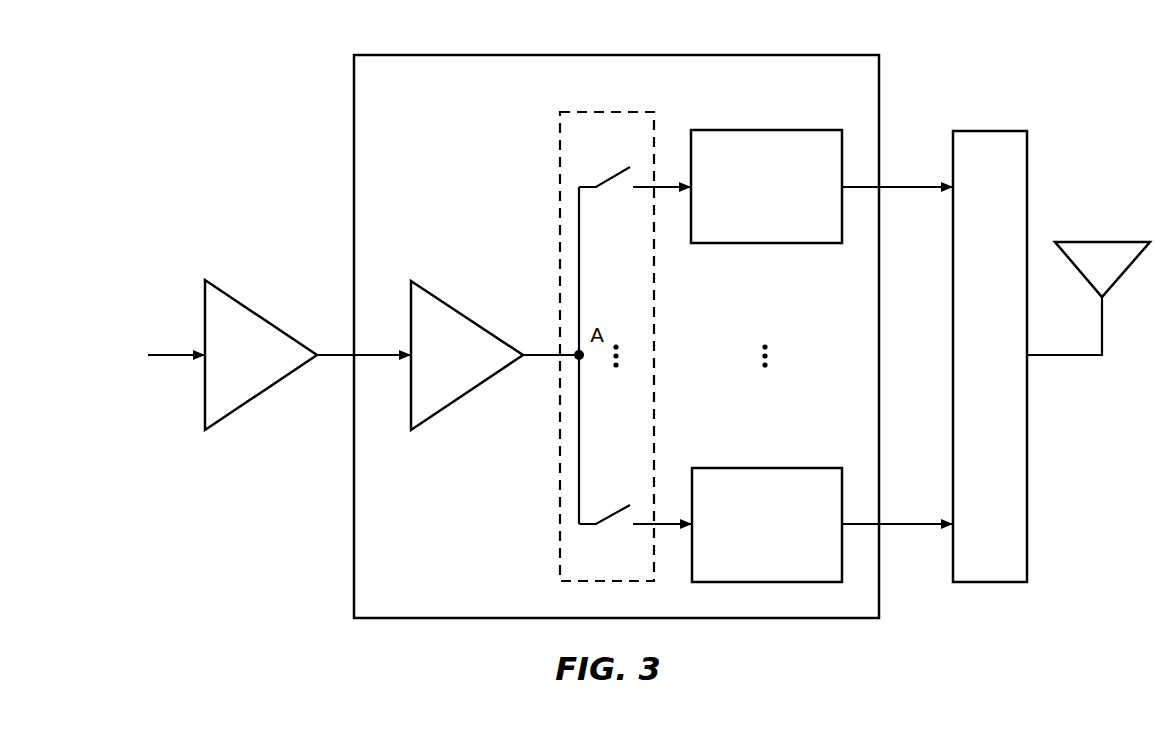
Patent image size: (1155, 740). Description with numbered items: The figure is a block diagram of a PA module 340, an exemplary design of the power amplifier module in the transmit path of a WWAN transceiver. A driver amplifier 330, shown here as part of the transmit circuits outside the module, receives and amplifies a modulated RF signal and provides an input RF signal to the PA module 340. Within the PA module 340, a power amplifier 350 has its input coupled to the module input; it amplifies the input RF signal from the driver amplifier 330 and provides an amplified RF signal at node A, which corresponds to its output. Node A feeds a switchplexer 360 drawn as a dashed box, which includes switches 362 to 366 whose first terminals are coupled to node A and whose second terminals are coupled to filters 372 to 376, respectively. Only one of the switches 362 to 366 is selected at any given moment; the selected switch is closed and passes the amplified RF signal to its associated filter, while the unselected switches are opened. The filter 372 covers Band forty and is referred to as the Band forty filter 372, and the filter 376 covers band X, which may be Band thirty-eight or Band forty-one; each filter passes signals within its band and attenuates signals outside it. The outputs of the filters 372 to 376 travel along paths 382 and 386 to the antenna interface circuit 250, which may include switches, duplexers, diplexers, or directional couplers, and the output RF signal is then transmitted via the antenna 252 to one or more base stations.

The driver amplifier 330 is at (251, 311).
The PA module 340 is at (607, 53).
The power amplifier 350 is at (464, 315).
The switchplexer 360 is at (607, 326).
The switch 362 is at (608, 171).
The switch 366 is at (606, 510).
The Band 40 filter 372 is at (752, 128).
The filter 376 is at (752, 466).
The output signal path 382 is at (892, 127).
The output signal path 386 is at (892, 467).
The antenna interface circuit 250 is at (982, 129).
The antenna 252 is at (1095, 241).